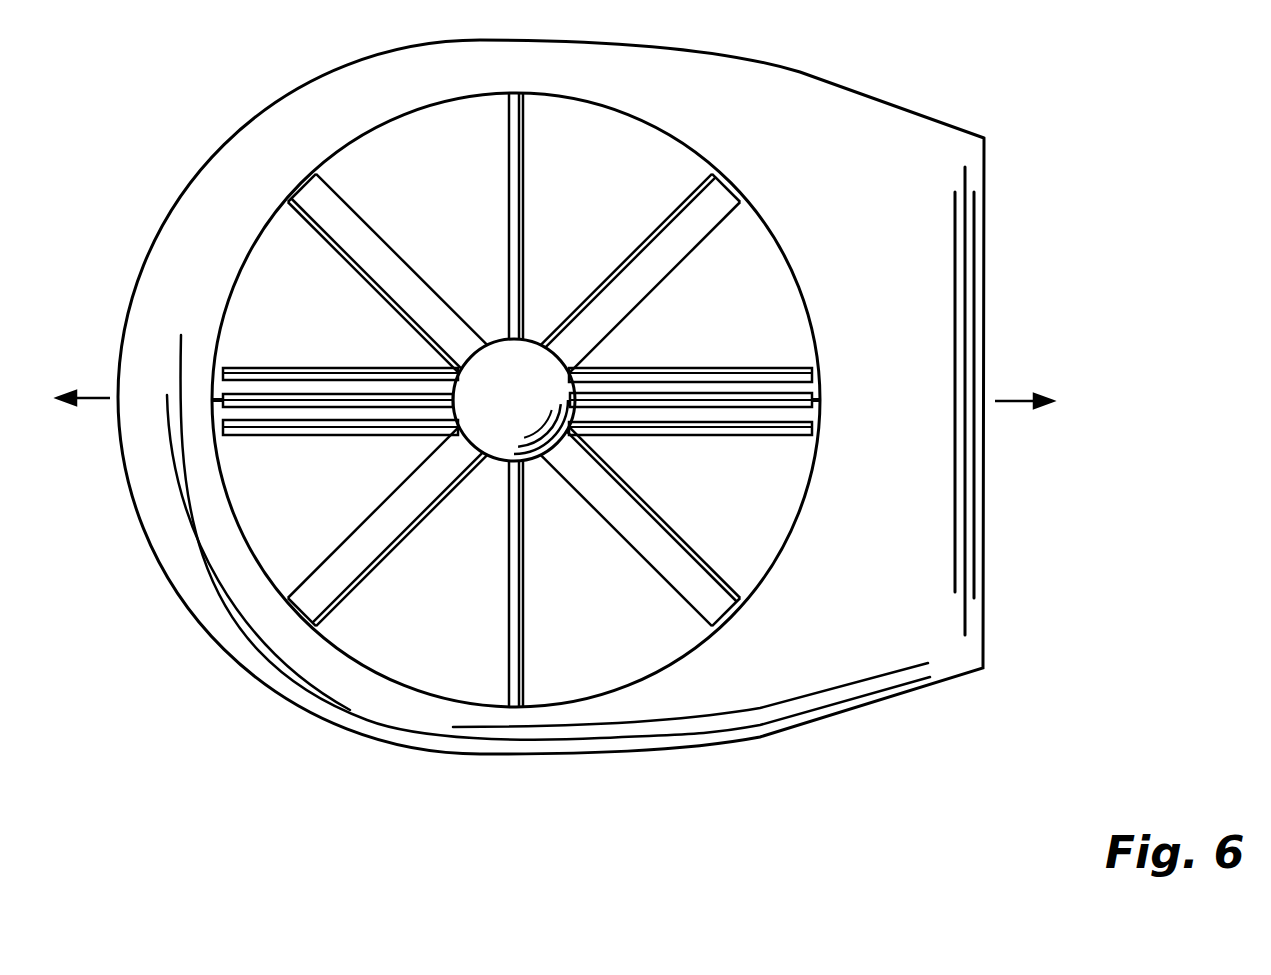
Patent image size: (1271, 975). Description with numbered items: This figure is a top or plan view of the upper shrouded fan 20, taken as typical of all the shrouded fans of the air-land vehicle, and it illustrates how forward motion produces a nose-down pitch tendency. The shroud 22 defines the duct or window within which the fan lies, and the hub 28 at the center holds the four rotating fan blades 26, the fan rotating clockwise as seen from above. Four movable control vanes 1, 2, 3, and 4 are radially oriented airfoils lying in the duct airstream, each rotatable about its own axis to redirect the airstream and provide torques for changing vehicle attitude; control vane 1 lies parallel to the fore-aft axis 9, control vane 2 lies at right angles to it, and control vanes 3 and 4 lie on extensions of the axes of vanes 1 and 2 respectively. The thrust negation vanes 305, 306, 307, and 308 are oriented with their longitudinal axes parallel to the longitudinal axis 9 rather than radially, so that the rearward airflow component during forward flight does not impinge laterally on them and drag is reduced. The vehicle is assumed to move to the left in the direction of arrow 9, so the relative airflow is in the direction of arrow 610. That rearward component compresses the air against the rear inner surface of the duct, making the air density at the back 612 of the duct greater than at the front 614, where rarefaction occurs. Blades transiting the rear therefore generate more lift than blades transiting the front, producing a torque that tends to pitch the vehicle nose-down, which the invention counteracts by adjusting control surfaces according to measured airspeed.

The control vane 1 is at (262, 388).
The control vane 2 is at (523, 148).
The control vane 3 is at (698, 410).
The control vane 4 is at (508, 632).
The longitudinal x axis 9 is at (97, 397).
The upper shrouded fan 20 is at (615, 201).
The shroud 22 is at (223, 483).
The fan blades 26 is at (373, 225).
The hub 28 is at (541, 338).
The thrust negation vane 305 is at (350, 367).
The thrust negation vane 306 is at (712, 368).
The thrust negation vane 307 is at (772, 435).
The thrust negation vane 308 is at (350, 436).
The relative airflow arrow 610 is at (1016, 400).
The back of the duct 612 is at (719, 386).
The front of the duct 614 is at (335, 367).